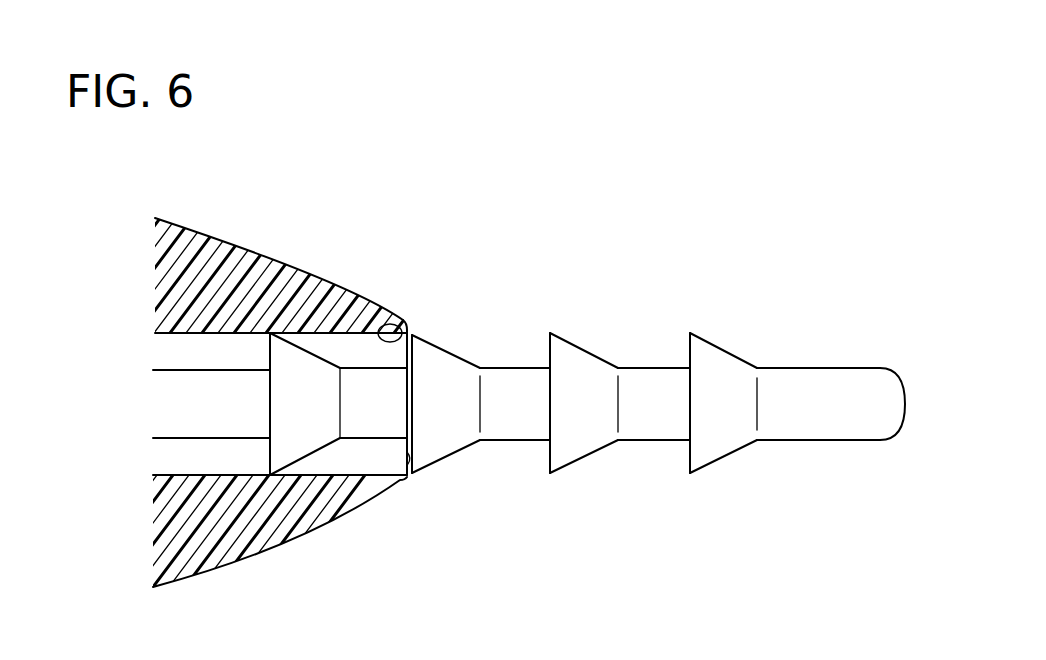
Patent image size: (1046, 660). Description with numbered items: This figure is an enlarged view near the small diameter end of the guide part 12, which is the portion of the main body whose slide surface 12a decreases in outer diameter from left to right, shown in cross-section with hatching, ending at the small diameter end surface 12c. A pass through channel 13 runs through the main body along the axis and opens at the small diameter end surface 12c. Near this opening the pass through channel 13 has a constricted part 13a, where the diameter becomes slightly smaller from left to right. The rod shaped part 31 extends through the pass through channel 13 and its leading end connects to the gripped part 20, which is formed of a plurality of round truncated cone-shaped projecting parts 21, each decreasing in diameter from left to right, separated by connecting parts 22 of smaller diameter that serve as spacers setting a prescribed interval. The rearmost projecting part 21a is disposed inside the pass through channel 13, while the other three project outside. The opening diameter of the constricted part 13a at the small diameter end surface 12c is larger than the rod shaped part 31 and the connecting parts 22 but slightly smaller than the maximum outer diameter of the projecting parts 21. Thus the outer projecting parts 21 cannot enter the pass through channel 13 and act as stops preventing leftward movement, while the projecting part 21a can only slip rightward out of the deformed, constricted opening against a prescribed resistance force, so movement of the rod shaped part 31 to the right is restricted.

The guide part 12 is at (298, 228).
The slide surface 12a is at (197, 227).
The small diameter end surface 12c is at (413, 458).
The pass through channel 13 is at (211, 467).
The constricted part 13a is at (386, 321).
The gripped part 20 is at (624, 311).
The projecting part 21 is at (420, 343).
The projecting part most toward the back 21a is at (283, 458).
The connecting part 22 is at (500, 377).
The rod shaped part 31 is at (169, 430).